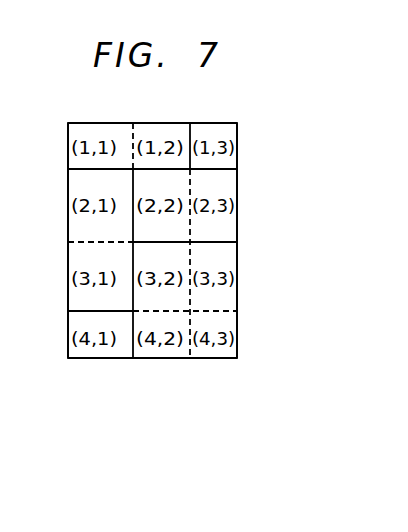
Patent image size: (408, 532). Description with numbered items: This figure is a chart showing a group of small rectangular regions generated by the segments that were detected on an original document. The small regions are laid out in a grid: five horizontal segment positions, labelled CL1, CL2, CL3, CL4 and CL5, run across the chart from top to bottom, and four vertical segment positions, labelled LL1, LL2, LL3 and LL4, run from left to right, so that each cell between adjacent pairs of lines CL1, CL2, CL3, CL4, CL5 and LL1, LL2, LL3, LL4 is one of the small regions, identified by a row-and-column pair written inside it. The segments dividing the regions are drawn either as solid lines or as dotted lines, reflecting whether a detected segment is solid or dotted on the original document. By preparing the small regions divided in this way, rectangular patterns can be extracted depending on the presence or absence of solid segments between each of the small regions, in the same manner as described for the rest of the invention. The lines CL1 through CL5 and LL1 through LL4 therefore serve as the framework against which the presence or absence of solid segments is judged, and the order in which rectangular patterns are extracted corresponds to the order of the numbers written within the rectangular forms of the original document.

The column line 1 CL1 is at (273, 122).
The column line 2 CL2 is at (273, 169).
The column line 3 CL3 is at (273, 241).
The column line 4 CL4 is at (273, 312).
The column line 5 CL5 is at (273, 359).
The line 1 LL1 is at (68, 392).
The line 2 LL2 is at (134, 392).
The line 3 LL3 is at (191, 392).
The line 4 LL4 is at (238, 392).